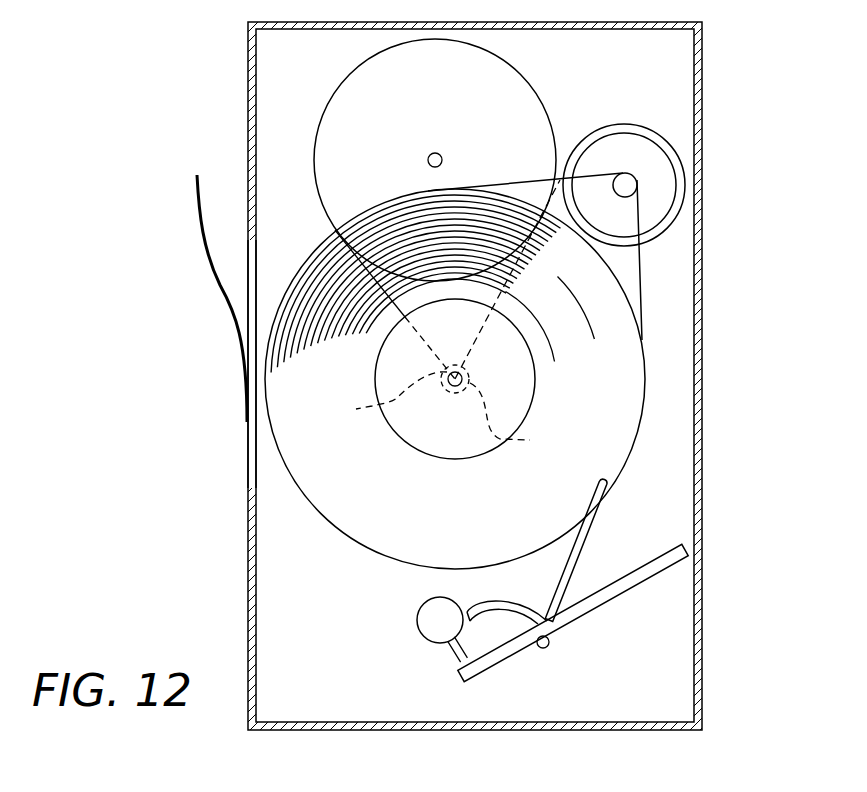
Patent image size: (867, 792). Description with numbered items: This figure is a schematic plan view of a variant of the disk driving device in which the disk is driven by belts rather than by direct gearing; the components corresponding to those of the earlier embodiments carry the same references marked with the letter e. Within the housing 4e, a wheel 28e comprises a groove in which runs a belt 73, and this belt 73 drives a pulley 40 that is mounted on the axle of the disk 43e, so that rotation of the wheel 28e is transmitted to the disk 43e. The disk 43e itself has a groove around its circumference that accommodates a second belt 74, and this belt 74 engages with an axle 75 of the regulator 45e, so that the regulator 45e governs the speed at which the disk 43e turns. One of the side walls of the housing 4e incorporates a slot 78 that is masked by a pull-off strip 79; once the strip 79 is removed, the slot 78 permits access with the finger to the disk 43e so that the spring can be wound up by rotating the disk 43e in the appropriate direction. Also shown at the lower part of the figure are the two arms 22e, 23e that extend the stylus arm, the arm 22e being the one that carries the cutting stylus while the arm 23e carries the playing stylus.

The housing 4e is at (667, 97).
The disk 43e is at (618, 390).
The wheel 28e is at (448, 124).
The regulator 45e is at (657, 192).
The axle of the regulator 75 is at (625, 174).
The belt 74 is at (642, 272).
The belt 73 is at (382, 397).
The pulley 40 is at (517, 418).
The pull-off strip 79 is at (247, 422).
The slot 78 is at (256, 274).
The arm 22e is at (595, 507).
The arm 23e is at (582, 610).